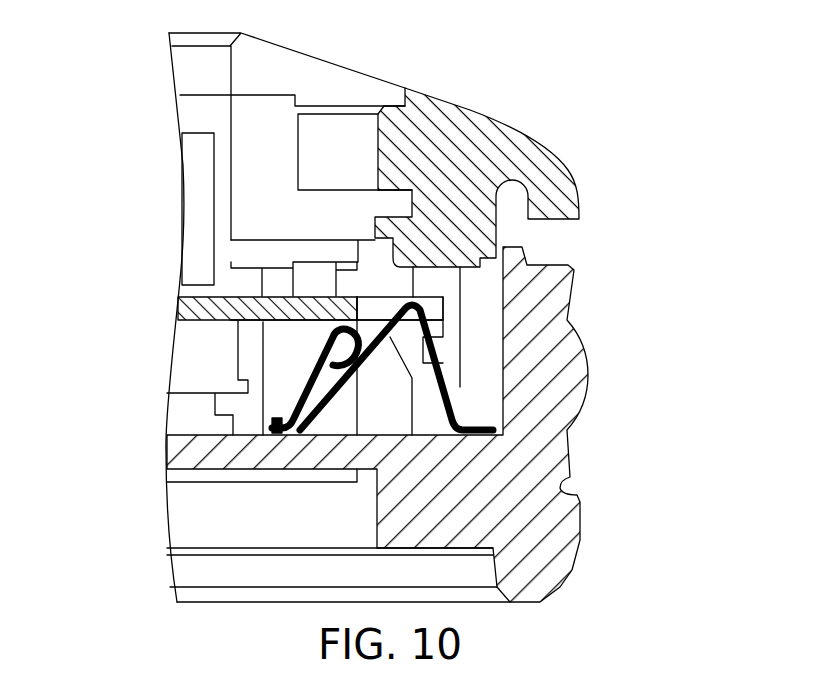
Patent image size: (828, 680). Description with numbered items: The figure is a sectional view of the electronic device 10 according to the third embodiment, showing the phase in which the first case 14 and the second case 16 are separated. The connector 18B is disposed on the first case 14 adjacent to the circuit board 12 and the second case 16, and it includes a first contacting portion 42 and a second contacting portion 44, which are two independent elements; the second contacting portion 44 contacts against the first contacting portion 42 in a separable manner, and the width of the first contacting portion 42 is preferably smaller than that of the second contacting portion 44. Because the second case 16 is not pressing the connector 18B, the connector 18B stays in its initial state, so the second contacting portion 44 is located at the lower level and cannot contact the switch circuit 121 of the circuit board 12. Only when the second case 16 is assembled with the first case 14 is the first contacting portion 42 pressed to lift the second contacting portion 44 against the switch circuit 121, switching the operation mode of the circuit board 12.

The electronic device 10 is at (628, 48).
The circuit board 12 is at (178, 310).
The switch circuit 121 is at (330, 327).
The first case 14 is at (567, 537).
The second case 16 is at (470, 138).
The connector 18B is at (372, 363).
The first contacting portion 42 is at (420, 303).
The second contacting portion 44 is at (340, 338).